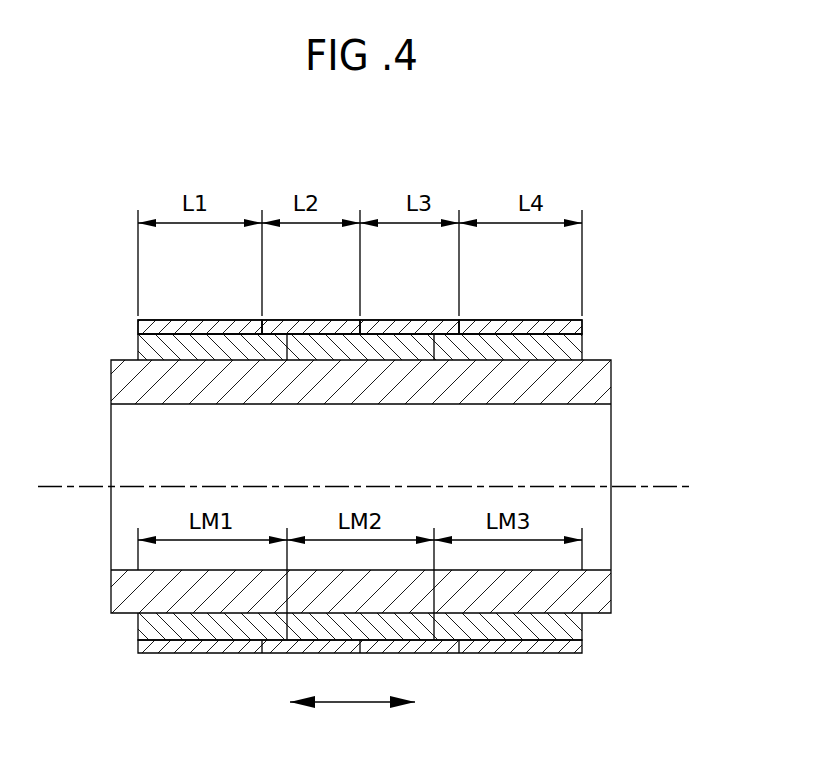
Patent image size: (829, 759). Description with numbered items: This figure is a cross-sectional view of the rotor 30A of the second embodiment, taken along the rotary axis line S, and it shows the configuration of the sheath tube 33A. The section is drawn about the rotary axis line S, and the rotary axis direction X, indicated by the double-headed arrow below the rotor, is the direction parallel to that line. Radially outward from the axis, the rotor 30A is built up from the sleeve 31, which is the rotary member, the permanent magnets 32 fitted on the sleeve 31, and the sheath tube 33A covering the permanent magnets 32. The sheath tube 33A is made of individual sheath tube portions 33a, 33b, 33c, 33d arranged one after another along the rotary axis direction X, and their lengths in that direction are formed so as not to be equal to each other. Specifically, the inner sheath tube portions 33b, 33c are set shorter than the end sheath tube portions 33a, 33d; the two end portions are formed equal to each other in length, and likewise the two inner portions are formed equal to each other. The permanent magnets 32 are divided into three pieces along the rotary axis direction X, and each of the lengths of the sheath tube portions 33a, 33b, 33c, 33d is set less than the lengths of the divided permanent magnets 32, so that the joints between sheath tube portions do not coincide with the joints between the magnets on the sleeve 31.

The rotor 30A is at (660, 256).
The sleeve 31 is at (612, 372).
The permanent magnets 32 is at (195, 350).
The sheath tube 33A is at (598, 318).
The sheath tube portion 33a is at (199, 318).
The sheath tube portion 33b is at (305, 318).
The sheath tube portion 33c is at (413, 318).
The sheath tube portion 33d is at (520, 318).
The rotary axis line S is at (652, 486).
The rotary axis direction X is at (352, 703).